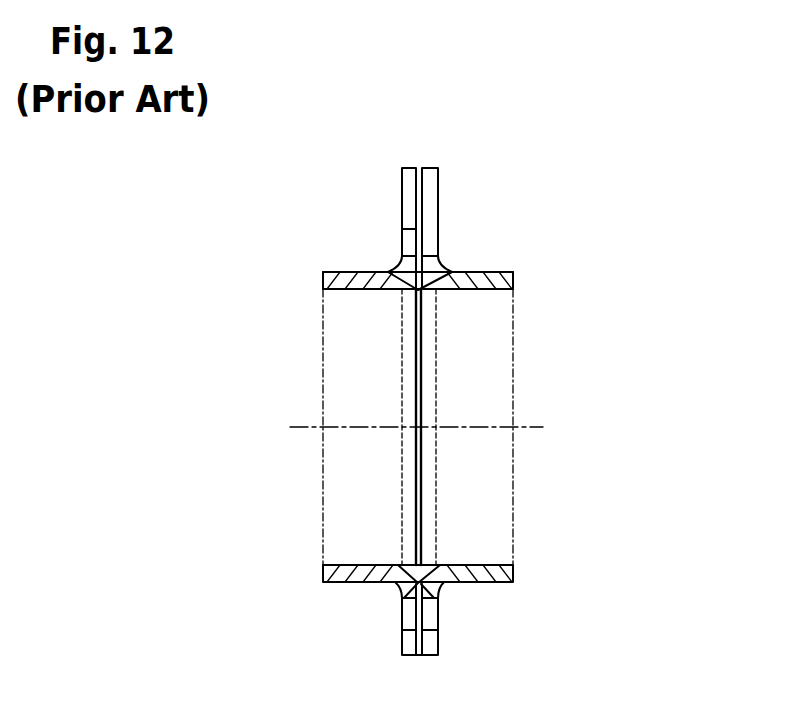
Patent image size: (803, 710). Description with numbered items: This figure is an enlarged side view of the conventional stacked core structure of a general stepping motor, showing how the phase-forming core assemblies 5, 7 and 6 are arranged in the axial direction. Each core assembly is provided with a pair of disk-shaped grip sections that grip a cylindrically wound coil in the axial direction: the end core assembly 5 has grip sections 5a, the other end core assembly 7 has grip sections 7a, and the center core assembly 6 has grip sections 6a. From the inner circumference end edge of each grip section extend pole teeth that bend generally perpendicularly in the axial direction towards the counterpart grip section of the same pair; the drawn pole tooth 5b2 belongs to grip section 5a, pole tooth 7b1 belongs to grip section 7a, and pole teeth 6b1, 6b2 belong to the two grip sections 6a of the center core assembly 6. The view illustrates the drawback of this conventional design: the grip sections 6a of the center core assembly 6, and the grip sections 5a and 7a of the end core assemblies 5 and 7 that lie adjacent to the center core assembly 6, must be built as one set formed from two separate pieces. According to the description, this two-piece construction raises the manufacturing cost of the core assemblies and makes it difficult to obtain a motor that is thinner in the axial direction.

The core assembly 5 is at (405, 482).
The core assembly 7 is at (382, 603).
The grip section 5a is at (349, 228).
The grip section 7a is at (402, 229).
The core assembly 6 is at (478, 252).
The grip section 6a is at (436, 219).
The pole tooth 5b2 is at (352, 319).
The pole tooth 7b1 is at (352, 292).
The pole tooth 6b1 is at (495, 438).
The pole tooth 6b2 is at (467, 293).